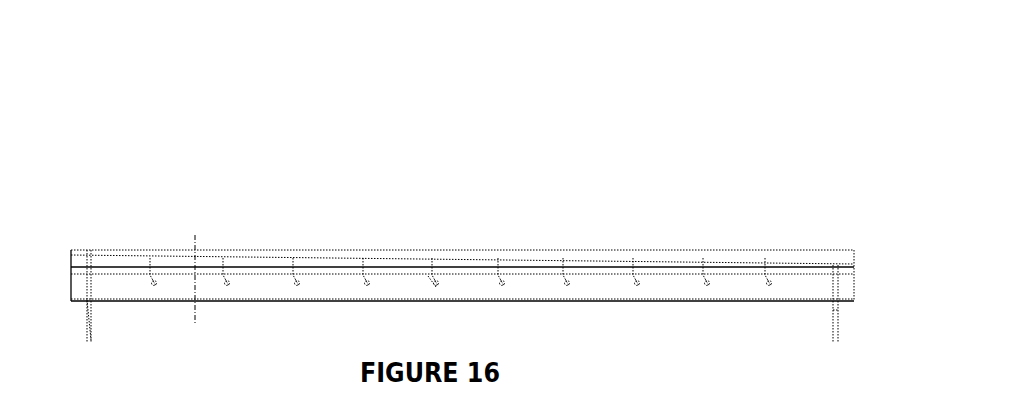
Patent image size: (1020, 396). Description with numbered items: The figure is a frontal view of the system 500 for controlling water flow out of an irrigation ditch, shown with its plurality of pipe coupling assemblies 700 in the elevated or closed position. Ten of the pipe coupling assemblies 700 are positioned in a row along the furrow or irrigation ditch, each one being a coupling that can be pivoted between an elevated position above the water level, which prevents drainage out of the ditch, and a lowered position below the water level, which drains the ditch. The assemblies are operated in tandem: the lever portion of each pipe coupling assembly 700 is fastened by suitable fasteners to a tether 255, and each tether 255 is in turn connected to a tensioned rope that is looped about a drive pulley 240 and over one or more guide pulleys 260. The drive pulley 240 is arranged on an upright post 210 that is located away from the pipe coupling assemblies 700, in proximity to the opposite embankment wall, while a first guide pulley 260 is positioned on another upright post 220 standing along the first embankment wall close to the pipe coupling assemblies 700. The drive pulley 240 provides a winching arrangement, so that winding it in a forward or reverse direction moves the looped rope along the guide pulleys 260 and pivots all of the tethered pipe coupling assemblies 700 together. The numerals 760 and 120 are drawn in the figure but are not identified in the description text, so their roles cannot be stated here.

The system 500 is at (240, 194).
The pipe coupling assembly 700 is at (148, 262).
The drive pulley 240 is at (90, 248).
The upright post 210 is at (92, 333).
The tether 255 is at (370, 232).
The clip hook 760 is at (430, 290).
The rail 120 is at (847, 267).
The guide pulley 260 is at (833, 265).
The upright post 220 is at (833, 323).